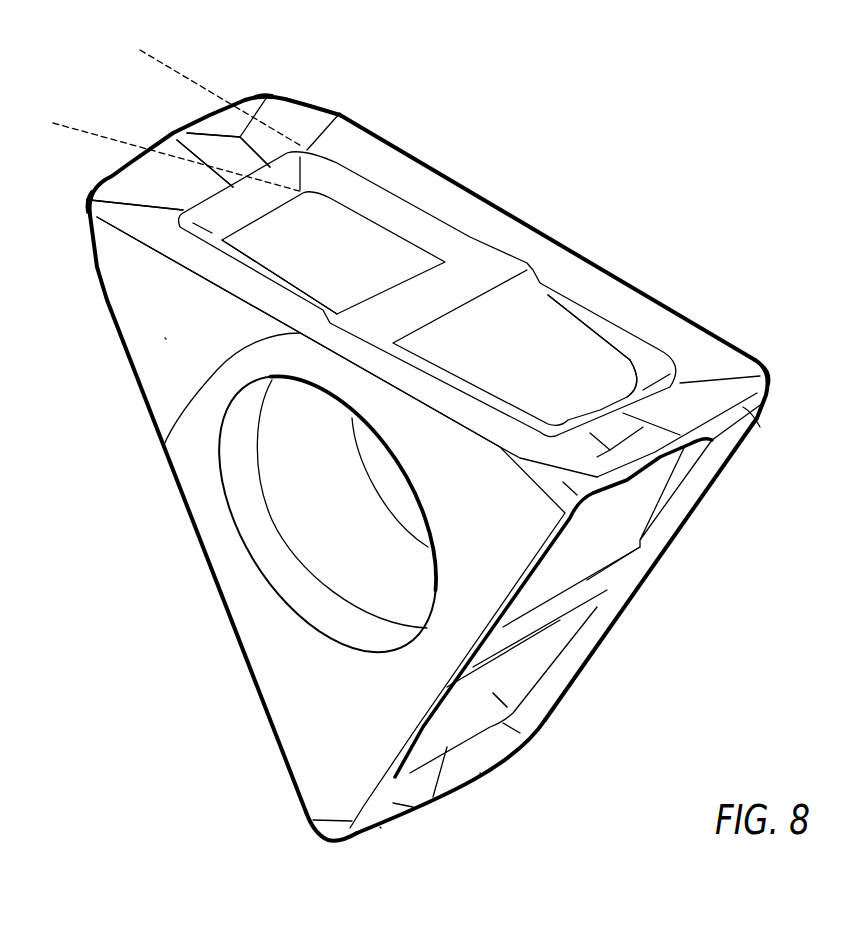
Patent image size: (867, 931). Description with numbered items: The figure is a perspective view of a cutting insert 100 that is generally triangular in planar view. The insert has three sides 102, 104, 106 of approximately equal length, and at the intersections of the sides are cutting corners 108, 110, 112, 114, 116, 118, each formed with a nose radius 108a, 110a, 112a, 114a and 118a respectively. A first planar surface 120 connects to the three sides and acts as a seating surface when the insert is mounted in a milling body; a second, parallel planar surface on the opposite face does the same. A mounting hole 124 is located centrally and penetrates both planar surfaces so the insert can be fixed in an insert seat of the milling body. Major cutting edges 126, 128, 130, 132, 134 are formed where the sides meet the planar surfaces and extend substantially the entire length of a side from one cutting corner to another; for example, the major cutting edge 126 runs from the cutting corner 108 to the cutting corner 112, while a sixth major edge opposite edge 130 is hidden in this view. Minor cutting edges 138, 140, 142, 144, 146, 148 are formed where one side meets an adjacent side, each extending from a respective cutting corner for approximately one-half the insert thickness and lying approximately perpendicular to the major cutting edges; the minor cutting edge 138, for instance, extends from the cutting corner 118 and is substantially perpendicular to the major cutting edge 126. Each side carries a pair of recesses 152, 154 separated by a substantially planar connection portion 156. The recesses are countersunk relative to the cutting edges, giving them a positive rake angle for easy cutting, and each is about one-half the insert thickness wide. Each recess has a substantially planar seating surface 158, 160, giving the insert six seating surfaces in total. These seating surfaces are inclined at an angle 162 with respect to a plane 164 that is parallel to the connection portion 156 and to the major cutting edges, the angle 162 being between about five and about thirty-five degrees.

The cutting insert 100 is at (751, 110).
The side 102 is at (557, 355).
The side 104 is at (168, 545).
The side 106 is at (579, 634).
The cutting corner 108 is at (74, 194).
The nose radius 108a is at (84, 205).
The cutting corner 110 is at (340, 853).
The nose radius 110a is at (322, 857).
The cutting corner 112 is at (584, 528).
The nose radius 112a is at (648, 492).
The cutting corner 114 is at (270, 85).
The nose radius 114a is at (262, 90).
The cutting corner 116 is at (542, 737).
The cutting corner 118 is at (778, 381).
The nose radius 118a is at (768, 370).
The first planar surface 120 is at (170, 337).
The mounting hole 124 is at (272, 520).
The major cutting edge 126 is at (163, 447).
The major cutting edge 128 is at (447, 687).
The major cutting edge 130 is at (247, 663).
The major cutting edge 132 is at (452, 178).
The major cutting edge 134 is at (668, 550).
The minor cutting edge 138 is at (115, 175).
The minor cutting edge 140 is at (220, 110).
The minor cutting edge 142 is at (647, 462).
The minor cutting edge 144 is at (759, 421).
The minor cutting edge 146 is at (380, 827).
The minor cutting edge 148 is at (467, 783).
The recess 152 is at (334, 218).
The recess 154 is at (640, 378).
The connection portion 156 is at (527, 312).
The seating surface 158 is at (352, 253).
The seating surface 160 is at (598, 347).
The angle 162 is at (157, 65).
The plane 164 is at (147, 50).